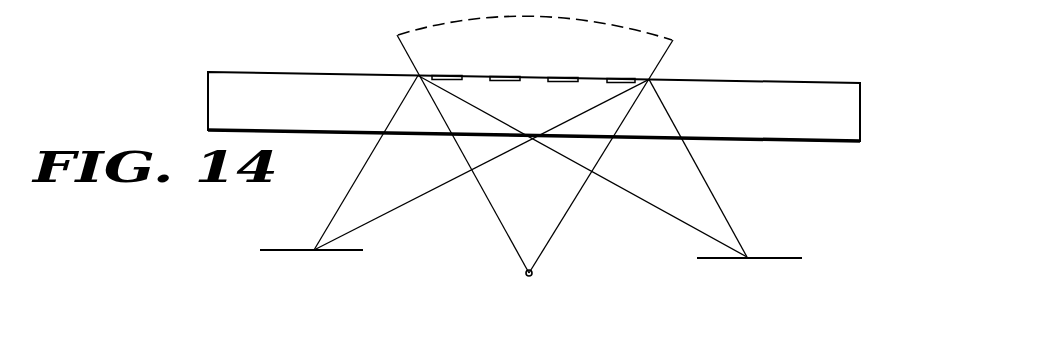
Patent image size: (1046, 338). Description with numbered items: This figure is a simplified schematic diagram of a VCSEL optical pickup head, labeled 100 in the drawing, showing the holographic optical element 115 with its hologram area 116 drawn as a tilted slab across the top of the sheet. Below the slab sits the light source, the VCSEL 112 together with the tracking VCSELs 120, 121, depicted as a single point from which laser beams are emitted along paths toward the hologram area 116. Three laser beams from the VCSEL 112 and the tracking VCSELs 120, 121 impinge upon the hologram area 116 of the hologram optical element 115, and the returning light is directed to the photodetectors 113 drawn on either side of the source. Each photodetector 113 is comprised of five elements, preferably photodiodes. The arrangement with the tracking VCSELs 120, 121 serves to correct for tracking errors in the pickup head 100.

The imaging system 100 is at (139, 225).
The hologram optical element 115 is at (767, 82).
The hologram area 116 is at (506, 81).
The photodetectors 113 is at (281, 248).
The VCSEL 112 is at (523, 273).
The tracking VCSEL 120 is at (529, 273).
The tracking VCSEL 121 is at (529, 273).